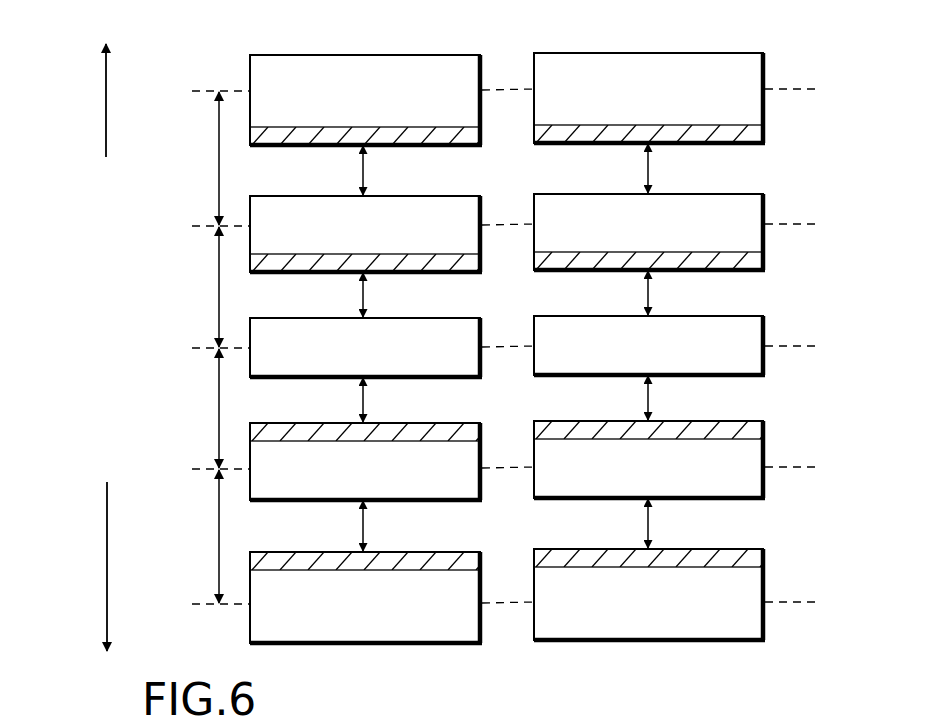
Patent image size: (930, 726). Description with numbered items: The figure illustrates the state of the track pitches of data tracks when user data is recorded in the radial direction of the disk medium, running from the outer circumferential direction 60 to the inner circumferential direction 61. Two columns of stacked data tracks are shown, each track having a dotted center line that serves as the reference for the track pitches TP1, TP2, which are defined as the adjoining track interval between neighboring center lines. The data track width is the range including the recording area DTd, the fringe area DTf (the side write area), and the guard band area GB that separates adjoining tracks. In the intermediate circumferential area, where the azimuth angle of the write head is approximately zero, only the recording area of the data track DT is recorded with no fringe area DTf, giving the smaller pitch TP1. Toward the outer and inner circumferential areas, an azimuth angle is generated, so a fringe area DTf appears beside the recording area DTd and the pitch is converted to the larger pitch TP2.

The outer circumferential direction 60 is at (106, 104).
The inner circumferential direction 61 is at (107, 563).
The recording area DTd is at (437, 57).
The data track DT is at (437, 322).
The fringe area DTf is at (320, 136).
The guard band area GB is at (527, 347).
The track pitch TP1 is at (192, 347).
The track pitch TP2 is at (192, 347).